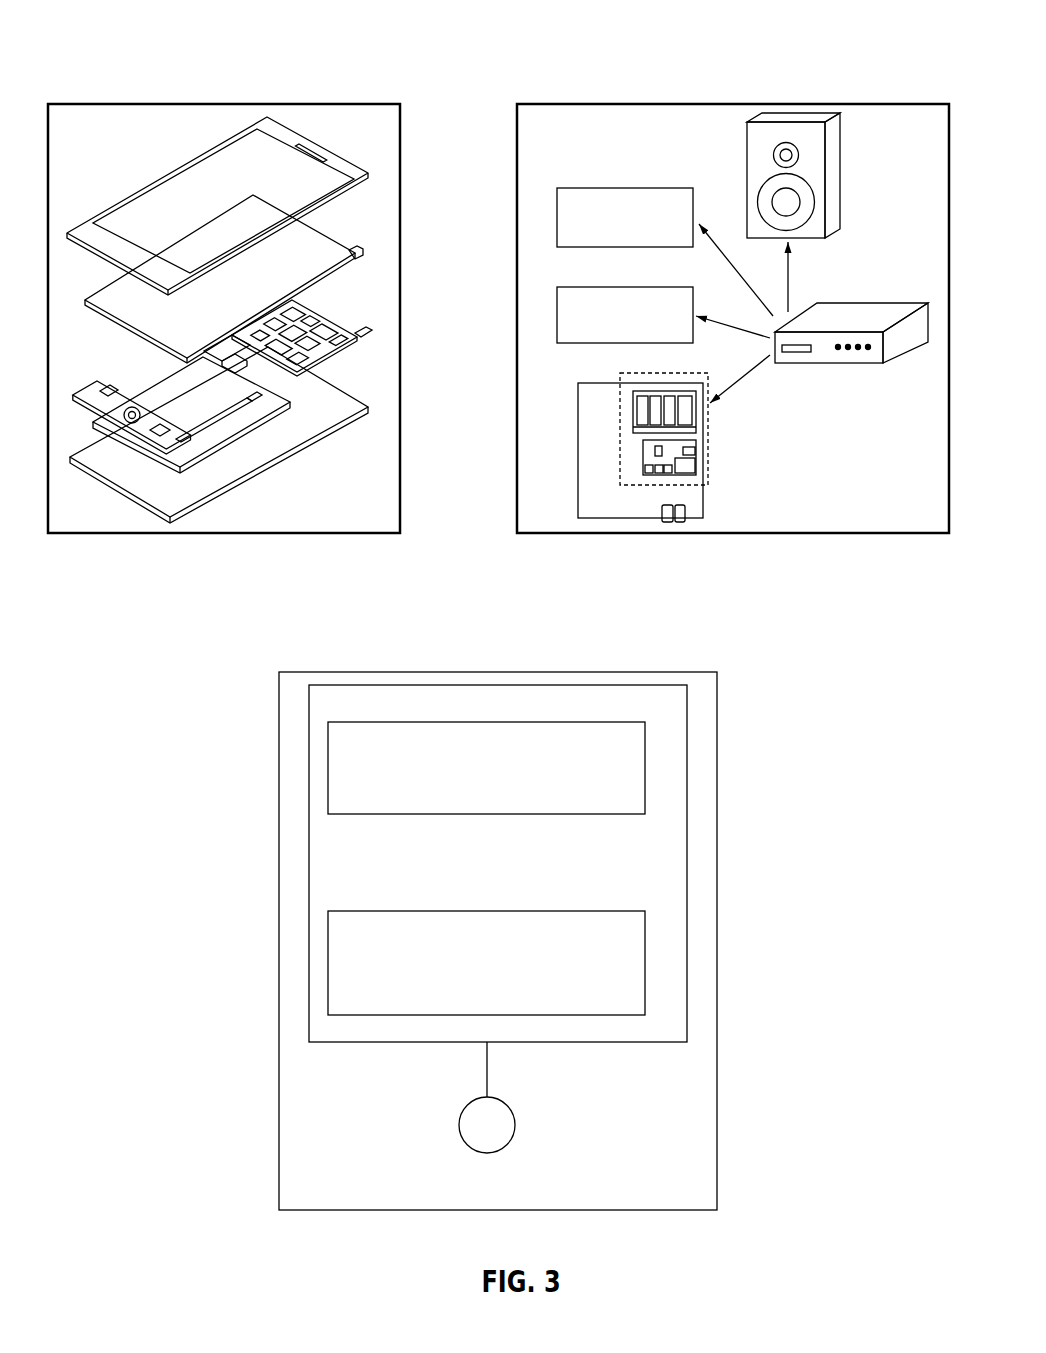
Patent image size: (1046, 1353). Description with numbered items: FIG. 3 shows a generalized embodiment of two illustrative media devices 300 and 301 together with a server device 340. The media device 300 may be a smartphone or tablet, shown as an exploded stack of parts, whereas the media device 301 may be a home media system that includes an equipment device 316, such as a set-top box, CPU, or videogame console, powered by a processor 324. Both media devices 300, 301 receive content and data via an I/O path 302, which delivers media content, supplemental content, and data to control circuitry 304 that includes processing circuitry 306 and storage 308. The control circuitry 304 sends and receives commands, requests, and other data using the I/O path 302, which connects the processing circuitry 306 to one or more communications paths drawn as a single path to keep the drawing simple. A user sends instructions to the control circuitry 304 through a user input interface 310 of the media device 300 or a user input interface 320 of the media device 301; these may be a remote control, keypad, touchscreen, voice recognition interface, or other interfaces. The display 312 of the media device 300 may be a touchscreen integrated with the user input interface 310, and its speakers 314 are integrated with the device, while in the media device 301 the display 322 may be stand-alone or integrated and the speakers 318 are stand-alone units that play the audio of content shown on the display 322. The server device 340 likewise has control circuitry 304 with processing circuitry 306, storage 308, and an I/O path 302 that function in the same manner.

The media device 300 is at (456, 33).
The media device 301 is at (849, 101).
The I/O path 302 is at (124, 403).
The control circuitry 304 is at (363, 410).
The processing circuitry 306 is at (330, 366).
The storage 308 is at (328, 330).
The user input interface 310 is at (380, 206).
The display 312 is at (389, 279).
The speakers 314 is at (304, 141).
The equipment device 316 is at (875, 303).
The speakers 318 is at (843, 208).
The user input interface 320 is at (618, 188).
The display 322 is at (618, 286).
The processor 324 is at (704, 496).
The server device 340 is at (456, 648).